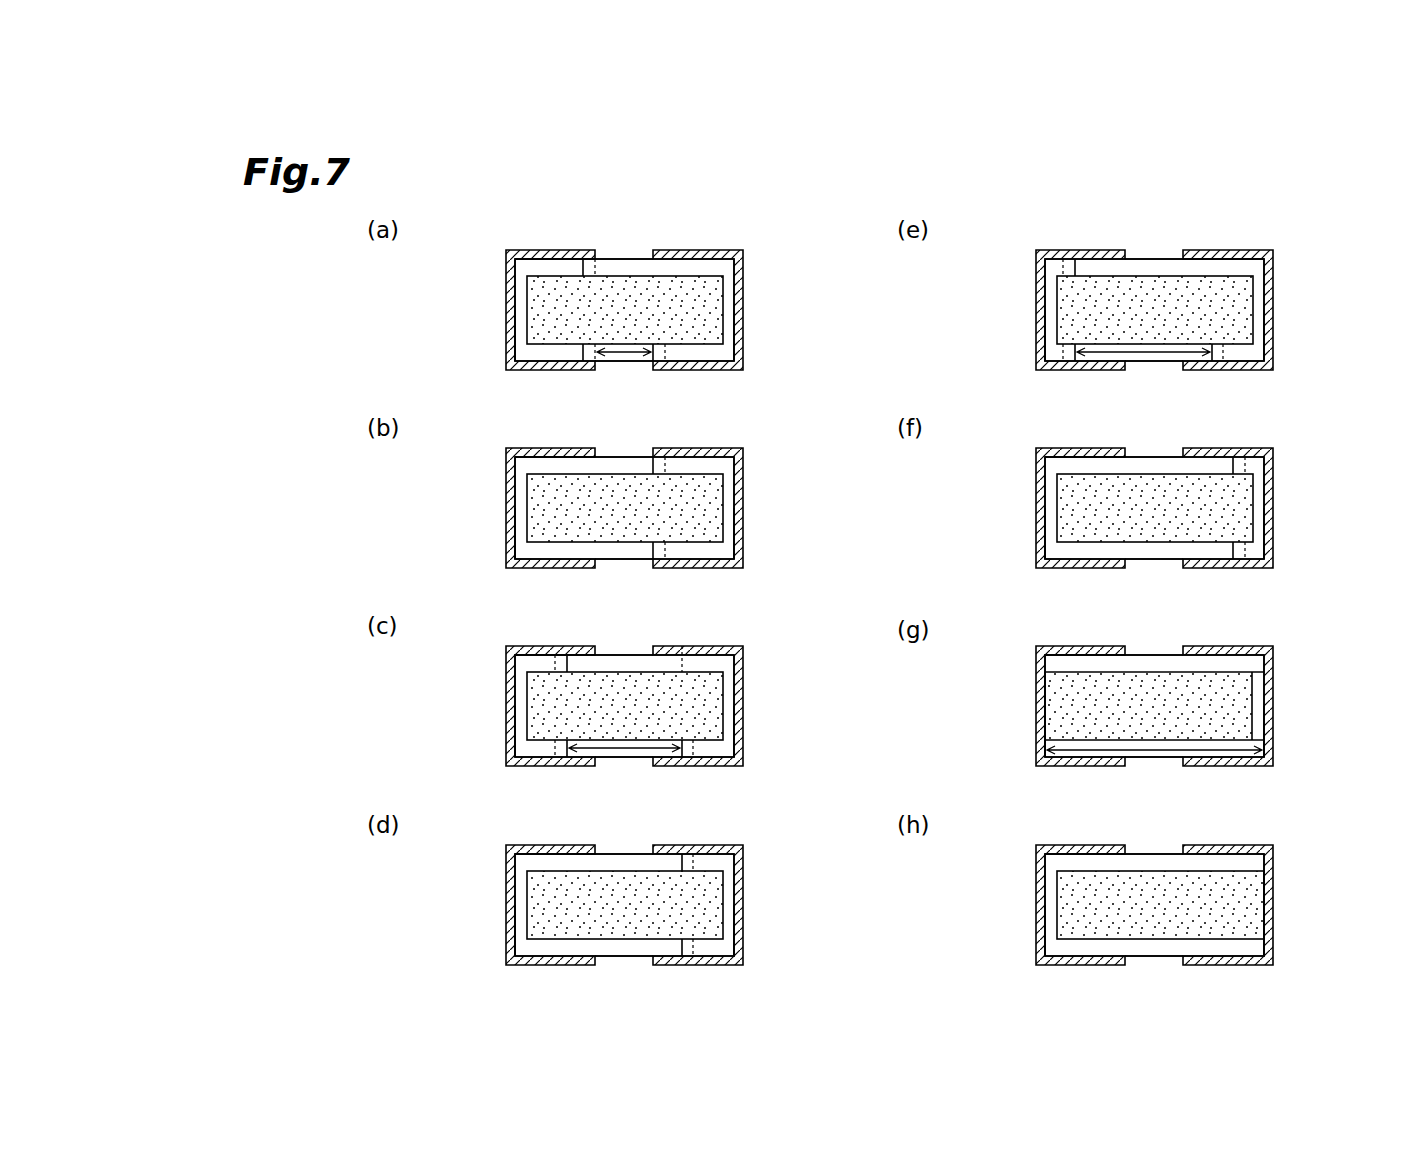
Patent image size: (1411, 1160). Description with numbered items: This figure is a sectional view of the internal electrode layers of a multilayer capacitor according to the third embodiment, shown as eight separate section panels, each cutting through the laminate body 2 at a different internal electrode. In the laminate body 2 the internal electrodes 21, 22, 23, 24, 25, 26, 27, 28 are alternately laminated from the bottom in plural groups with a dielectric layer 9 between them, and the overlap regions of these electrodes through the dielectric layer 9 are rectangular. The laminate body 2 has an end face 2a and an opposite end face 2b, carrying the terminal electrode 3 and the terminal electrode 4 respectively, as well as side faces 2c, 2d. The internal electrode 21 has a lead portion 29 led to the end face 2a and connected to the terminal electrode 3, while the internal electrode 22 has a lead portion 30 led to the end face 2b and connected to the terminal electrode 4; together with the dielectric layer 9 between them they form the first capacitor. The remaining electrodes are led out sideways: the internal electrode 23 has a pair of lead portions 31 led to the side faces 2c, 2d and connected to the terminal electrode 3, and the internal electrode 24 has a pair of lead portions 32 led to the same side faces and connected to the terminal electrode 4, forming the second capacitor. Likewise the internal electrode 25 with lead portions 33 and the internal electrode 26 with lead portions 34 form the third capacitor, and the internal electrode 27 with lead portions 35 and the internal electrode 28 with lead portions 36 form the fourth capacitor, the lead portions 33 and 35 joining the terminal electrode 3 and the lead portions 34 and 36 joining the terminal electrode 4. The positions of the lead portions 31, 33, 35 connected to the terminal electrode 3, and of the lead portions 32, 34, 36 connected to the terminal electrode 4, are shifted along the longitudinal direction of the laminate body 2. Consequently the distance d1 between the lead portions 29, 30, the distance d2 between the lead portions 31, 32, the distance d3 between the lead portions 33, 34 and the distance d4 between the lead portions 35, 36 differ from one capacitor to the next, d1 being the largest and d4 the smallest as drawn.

The laminate body 2 is at (633, 253).
The end face 2a is at (745, 326).
The end face 2b is at (506, 340).
The side face 2c is at (627, 252).
The side face 2d is at (633, 368).
The terminal electrode 3 is at (745, 281).
The terminal electrode 4 is at (506, 281).
The dielectric layer 9 is at (540, 265).
The internal electrode 21 is at (1105, 905).
The internal electrode 22 is at (1203, 708).
The internal electrode 23 is at (1105, 508).
The internal electrode 24 is at (1105, 310).
The internal electrode 25 is at (575, 905).
The internal electrode 26 is at (575, 706).
The internal electrode 27 is at (575, 508).
The internal electrode 28 is at (575, 310).
The lead portion 29 is at (1260, 907).
The lead portion 30 is at (1050, 707).
The lead portions 31 is at (1240, 468).
The lead portions 32 is at (1070, 270).
The lead portions 33 is at (690, 862).
The lead portions 34 is at (553, 666).
The lead portions 35 is at (663, 465).
The lead portions 36 is at (584, 268).
The distance between lead portions d1 is at (1153, 752).
The distance between lead portions d2 is at (1152, 356).
The distance between lead portions d3 is at (623, 754).
The distance between lead portions d4 is at (623, 357).